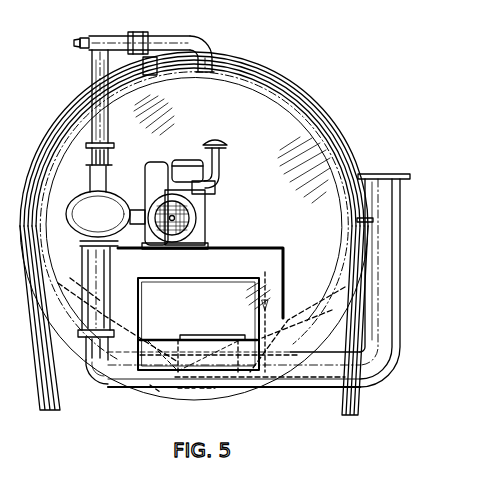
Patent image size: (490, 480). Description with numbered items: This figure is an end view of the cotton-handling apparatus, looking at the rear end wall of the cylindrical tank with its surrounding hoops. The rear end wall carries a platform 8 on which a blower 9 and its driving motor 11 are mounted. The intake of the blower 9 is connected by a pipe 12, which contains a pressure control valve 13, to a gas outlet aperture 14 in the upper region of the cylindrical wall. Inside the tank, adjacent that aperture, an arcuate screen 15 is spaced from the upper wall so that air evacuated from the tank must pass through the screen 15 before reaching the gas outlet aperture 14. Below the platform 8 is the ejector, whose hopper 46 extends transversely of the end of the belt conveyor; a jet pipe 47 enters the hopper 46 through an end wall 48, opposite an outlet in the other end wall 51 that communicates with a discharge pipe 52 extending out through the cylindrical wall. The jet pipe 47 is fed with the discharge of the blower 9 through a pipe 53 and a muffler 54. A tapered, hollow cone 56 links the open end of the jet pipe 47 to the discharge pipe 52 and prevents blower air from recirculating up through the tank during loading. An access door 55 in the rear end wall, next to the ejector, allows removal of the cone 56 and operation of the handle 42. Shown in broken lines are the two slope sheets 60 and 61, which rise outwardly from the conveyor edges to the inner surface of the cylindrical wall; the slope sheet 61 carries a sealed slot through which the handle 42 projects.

The platform 8 is at (228, 248).
The blower 9 is at (74, 232).
The driving motor 11 is at (146, 183).
The pipe 12 is at (92, 72).
The pressure control valve 13 is at (80, 42).
The gas outlet aperture 14 is at (200, 70).
The arcuate screen 15 is at (238, 82).
The handle 42 is at (267, 314).
The hopper 46 is at (176, 348).
The jet pipe 47 is at (178, 389).
The end wall 48 is at (150, 386).
The end wall 51 is at (248, 392).
The discharge pipe 52 is at (400, 232).
The pipe 53 is at (88, 382).
The muffler 54 is at (112, 265).
The access door 55 is at (180, 278).
The tapered hollow cone 56 is at (206, 389).
The slope sheet 60 is at (72, 282).
The slope sheet 61 is at (318, 294).